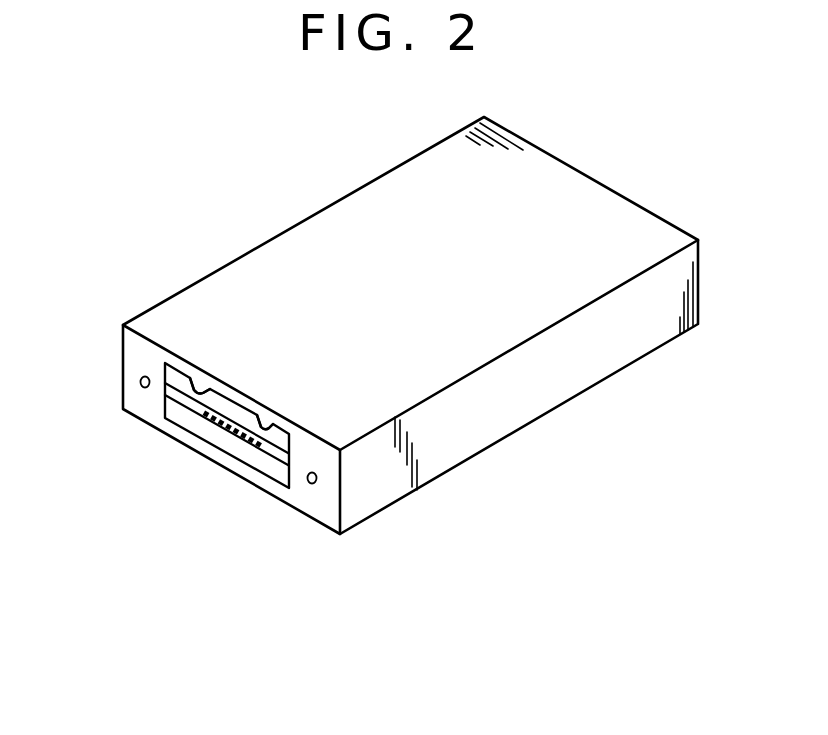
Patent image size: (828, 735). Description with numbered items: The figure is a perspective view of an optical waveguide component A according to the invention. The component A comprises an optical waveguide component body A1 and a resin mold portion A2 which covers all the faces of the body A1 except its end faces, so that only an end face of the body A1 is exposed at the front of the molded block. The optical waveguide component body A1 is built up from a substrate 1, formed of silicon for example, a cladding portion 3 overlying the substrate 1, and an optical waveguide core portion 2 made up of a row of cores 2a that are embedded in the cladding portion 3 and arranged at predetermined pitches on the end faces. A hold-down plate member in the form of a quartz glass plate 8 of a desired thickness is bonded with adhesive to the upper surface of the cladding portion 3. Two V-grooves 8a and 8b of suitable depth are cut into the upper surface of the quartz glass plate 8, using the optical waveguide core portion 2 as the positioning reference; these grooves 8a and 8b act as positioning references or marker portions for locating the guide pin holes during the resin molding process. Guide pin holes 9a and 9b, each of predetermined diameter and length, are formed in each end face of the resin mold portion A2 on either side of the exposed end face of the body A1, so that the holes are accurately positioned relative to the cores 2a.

The substrate 1 is at (288, 445).
The optical waveguide core portion 2 is at (170, 500).
The cores 2a is at (205, 415).
The cladding portion 3 is at (252, 440).
The quartz glass plate 8 is at (165, 418).
The V-groove 8a is at (199, 392).
The V-groove 8b is at (269, 426).
The guide pin hole 9a is at (140, 383).
The guide pin hole 9b is at (312, 485).
The optical waveguide component A is at (197, 609).
The optical waveguide component body A1 is at (161, 535).
The resin mold portion A2 is at (303, 503).